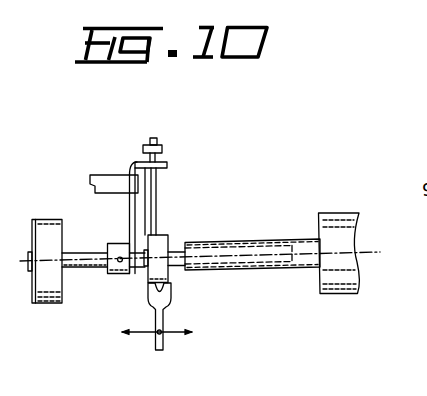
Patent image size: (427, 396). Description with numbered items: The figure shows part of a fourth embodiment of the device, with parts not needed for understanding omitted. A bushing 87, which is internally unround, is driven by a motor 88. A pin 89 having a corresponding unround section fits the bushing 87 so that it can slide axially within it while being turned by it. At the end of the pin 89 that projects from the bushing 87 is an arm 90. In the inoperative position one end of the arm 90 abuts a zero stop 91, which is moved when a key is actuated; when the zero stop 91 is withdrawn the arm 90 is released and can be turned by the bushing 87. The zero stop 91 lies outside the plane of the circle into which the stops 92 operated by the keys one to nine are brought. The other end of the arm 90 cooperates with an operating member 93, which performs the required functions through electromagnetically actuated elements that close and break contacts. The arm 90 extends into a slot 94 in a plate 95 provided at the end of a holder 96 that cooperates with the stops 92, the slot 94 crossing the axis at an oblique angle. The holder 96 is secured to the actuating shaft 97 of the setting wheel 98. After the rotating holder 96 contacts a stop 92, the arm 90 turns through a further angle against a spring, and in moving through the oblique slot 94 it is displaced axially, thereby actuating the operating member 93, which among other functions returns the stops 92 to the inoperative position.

The bushing 87 is at (228, 243).
The motor 88 is at (332, 233).
The pin 89 is at (173, 252).
The arm 90 is at (157, 182).
The zero stop 91 is at (162, 147).
The stop 92 is at (112, 183).
The operating member 93 is at (163, 315).
The slot 94 is at (168, 163).
The plate 95 is at (133, 166).
The holder 96 is at (129, 212).
The actuating shaft 97 is at (92, 268).
The setting wheel 98 is at (48, 299).